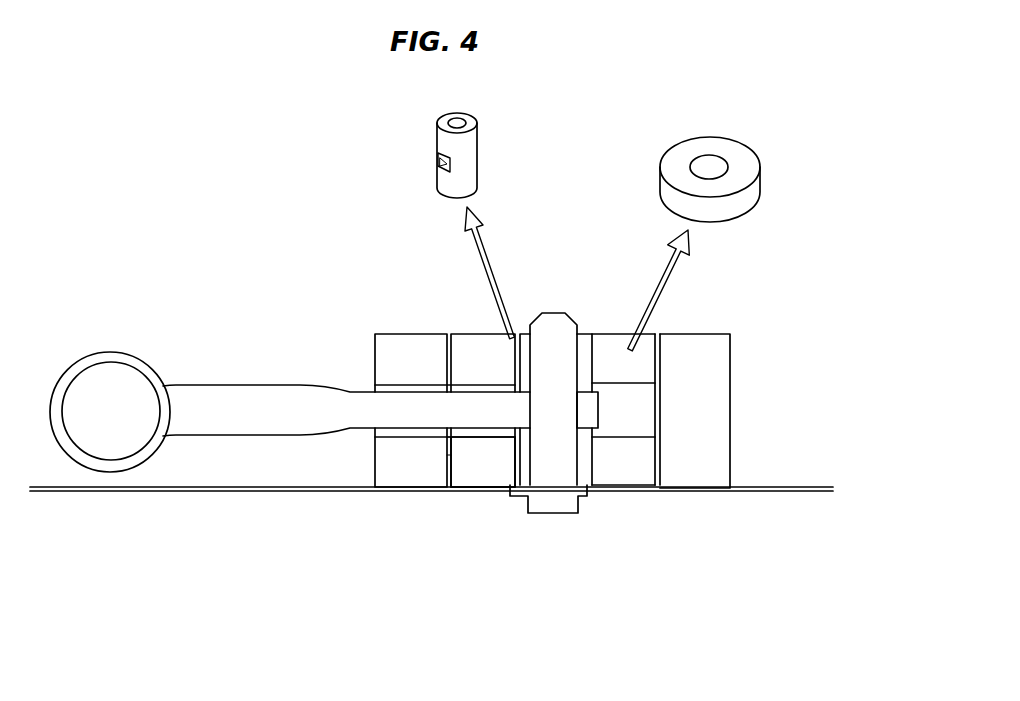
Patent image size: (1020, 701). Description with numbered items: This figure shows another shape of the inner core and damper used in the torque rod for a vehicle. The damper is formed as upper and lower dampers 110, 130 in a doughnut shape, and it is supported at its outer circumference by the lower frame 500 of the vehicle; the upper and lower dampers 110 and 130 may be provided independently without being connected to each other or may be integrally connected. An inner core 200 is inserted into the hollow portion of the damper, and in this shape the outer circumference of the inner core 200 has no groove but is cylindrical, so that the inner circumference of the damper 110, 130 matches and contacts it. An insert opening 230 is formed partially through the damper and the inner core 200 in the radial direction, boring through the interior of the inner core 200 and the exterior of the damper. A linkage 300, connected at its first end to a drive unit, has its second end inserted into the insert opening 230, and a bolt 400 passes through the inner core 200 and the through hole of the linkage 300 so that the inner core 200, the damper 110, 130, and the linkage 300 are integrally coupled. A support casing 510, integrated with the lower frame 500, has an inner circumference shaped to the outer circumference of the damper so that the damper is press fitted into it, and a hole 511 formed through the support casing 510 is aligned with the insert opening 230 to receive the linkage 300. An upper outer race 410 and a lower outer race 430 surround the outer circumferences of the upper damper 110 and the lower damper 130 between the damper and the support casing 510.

The upper damper 110 is at (475, 353).
The lower damper 130 is at (483, 467).
The inner core 200 is at (474, 152).
The insert opening 230 is at (438, 162).
The linkage 300 is at (257, 405).
The bolt 400 is at (555, 482).
The upper outer race 410 is at (447, 352).
The lower outer race 430 is at (447, 455).
The lower frame 500 is at (783, 490).
The support casing 510 is at (718, 390).
The hole 511 is at (405, 388).